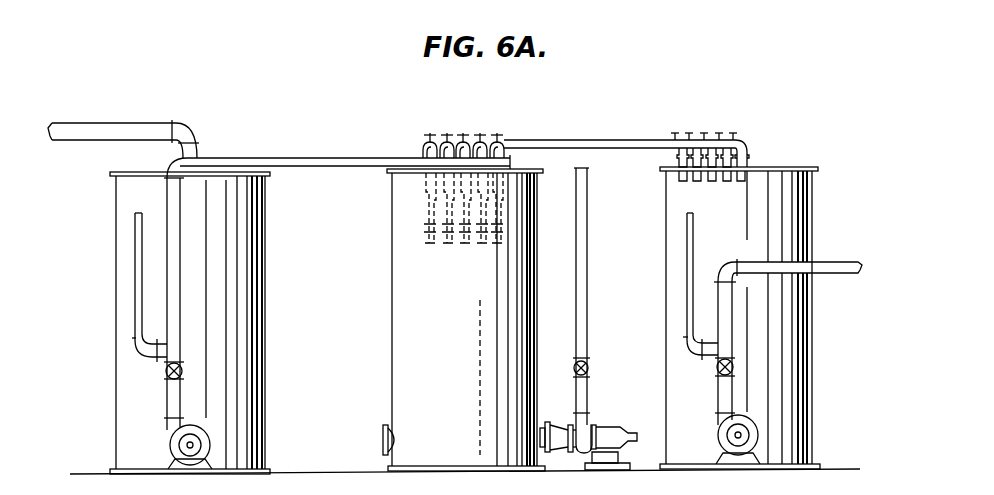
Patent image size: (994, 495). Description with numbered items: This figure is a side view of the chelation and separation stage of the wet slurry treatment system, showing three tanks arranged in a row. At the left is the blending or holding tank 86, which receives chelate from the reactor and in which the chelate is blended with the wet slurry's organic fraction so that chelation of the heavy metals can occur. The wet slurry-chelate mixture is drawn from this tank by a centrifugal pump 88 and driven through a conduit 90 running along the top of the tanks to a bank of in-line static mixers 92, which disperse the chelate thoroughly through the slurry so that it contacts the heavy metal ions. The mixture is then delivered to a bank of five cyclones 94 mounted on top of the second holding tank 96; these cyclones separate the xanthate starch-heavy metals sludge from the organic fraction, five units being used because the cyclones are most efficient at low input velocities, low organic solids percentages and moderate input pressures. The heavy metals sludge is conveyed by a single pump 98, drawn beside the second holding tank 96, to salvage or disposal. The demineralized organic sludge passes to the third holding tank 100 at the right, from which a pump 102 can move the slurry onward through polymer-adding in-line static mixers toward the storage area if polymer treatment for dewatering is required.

The blending or holding tank 86 is at (250, 400).
The centrifugal pump 88 is at (195, 445).
The conduit 90 is at (334, 157).
The in-line static mixer 92 is at (431, 134).
The cyclone 94 is at (498, 246).
The second holding tank 96 is at (549, 293).
The pump 98 is at (600, 432).
The third holding tank 100 is at (808, 383).
The pump 102 is at (742, 436).